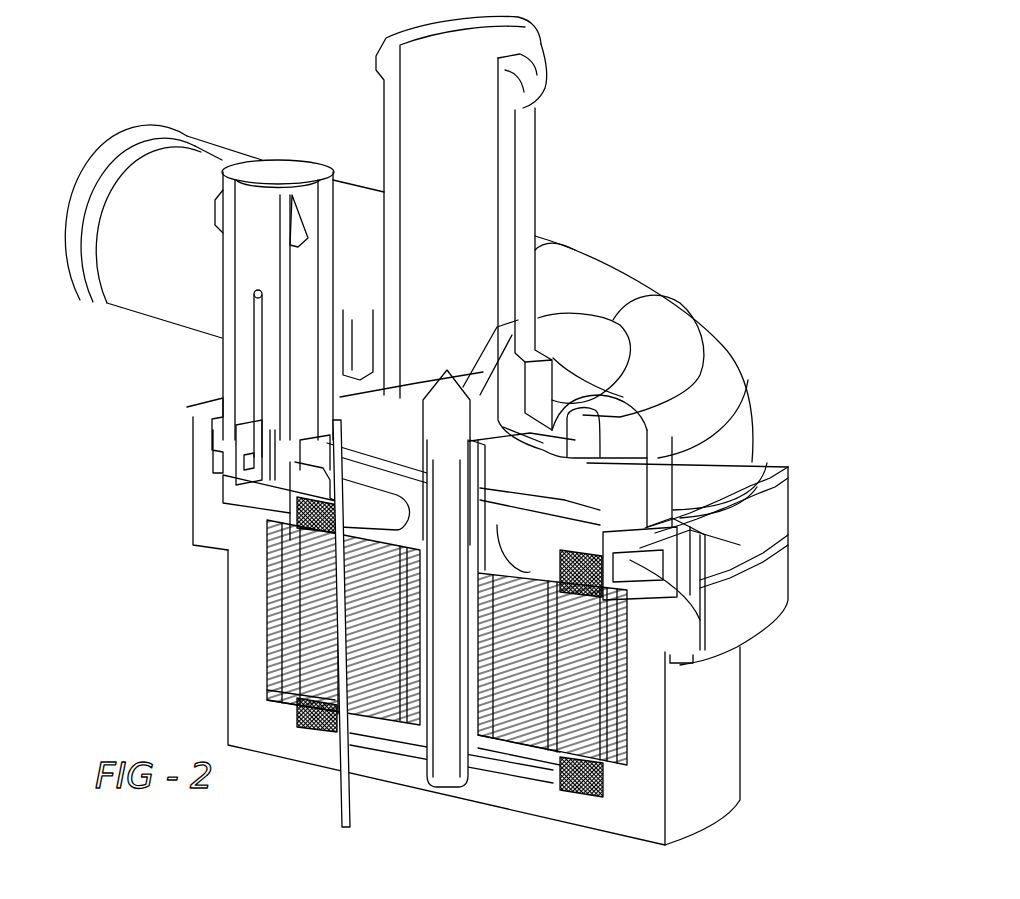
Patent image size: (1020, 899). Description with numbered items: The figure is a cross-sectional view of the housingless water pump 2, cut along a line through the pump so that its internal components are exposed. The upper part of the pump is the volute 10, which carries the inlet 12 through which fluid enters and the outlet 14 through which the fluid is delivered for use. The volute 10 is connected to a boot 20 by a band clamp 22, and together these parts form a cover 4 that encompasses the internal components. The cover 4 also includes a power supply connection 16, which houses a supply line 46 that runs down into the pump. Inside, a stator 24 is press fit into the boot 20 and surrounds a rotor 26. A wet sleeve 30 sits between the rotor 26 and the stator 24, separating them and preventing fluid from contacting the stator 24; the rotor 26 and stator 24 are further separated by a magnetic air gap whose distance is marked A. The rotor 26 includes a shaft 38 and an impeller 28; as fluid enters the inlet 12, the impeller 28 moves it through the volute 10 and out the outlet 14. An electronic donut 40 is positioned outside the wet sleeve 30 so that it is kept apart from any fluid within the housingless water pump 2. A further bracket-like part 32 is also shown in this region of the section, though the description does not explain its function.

The housingless water pump 2 is at (680, 128).
The cover 4 is at (752, 330).
The volute 10 is at (727, 394).
The inlet 12 is at (543, 76).
The outlet 14 is at (137, 153).
The power supply connection 16 is at (268, 180).
The boot 20 is at (705, 792).
The band clamp 22 is at (777, 523).
The stator 24 is at (265, 544).
The rotor 26 is at (370, 688).
The impeller 28 is at (788, 463).
The wet sleeve 30 is at (267, 622).
The bracket 32 is at (687, 507).
The shaft 38 is at (452, 760).
The electronic donut 40 is at (665, 590).
The supply line 46 is at (253, 311).
The magnetic air gap distance A is at (344, 810).